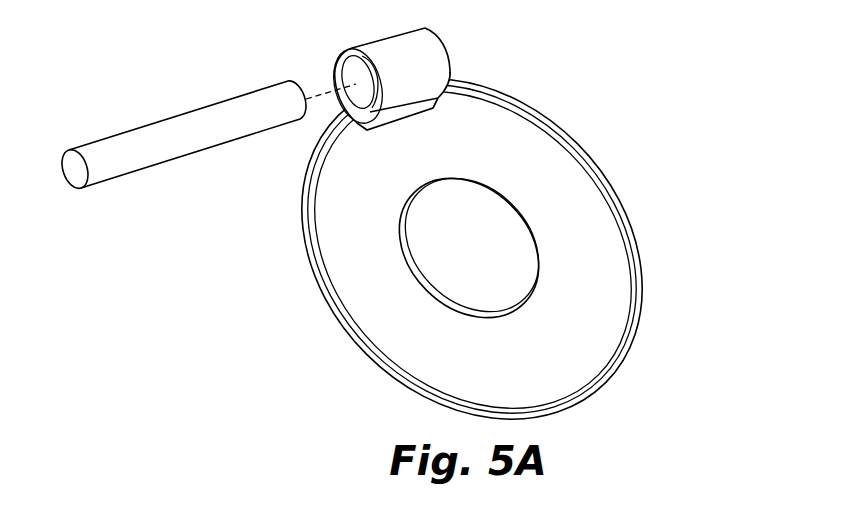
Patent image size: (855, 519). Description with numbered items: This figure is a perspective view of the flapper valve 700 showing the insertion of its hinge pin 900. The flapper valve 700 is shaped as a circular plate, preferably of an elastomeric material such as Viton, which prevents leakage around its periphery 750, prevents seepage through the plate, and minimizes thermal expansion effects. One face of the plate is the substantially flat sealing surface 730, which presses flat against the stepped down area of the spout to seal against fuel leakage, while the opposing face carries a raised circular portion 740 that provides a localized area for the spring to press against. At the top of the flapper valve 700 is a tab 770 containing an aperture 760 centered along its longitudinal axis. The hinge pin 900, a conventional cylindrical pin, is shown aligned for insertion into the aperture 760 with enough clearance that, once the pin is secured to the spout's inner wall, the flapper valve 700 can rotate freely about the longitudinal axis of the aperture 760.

The flapper valve 700 is at (593, 82).
The flat sealing surface 730 is at (345, 336).
The raised circular portion 740 is at (476, 249).
The periphery 750 is at (599, 176).
The aperture 760 is at (352, 68).
The tab 770 is at (408, 52).
The hinge pin 900 is at (184, 122).